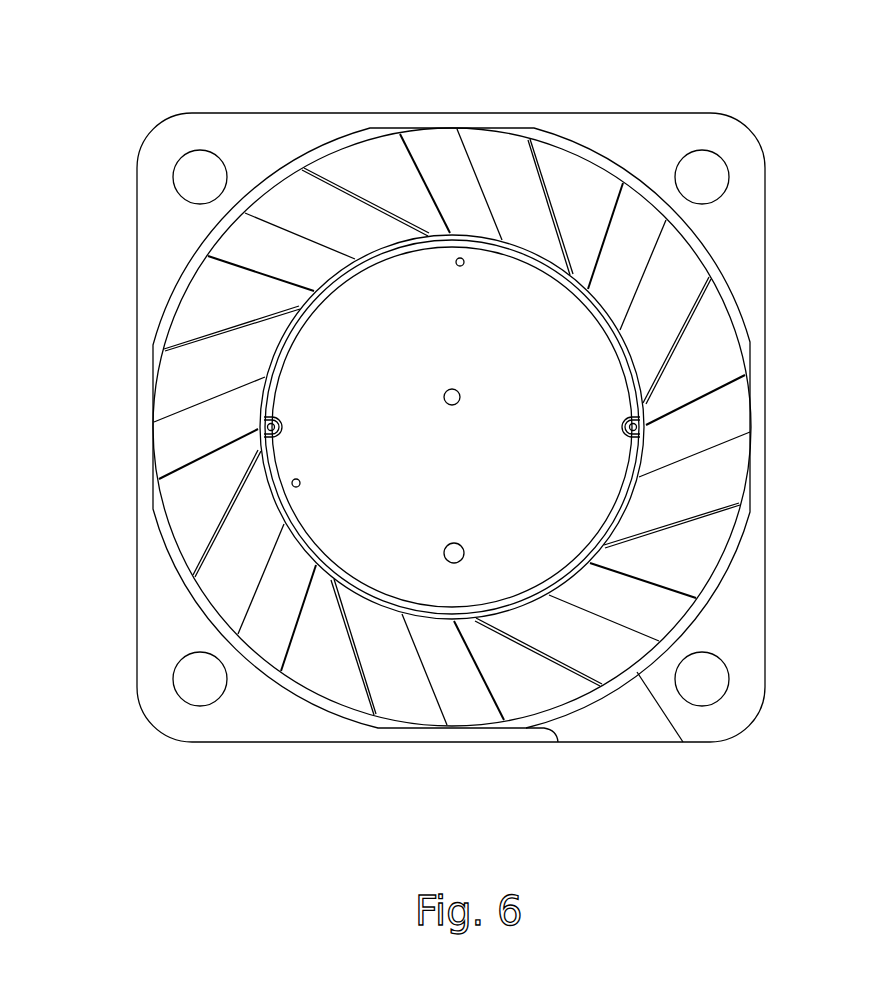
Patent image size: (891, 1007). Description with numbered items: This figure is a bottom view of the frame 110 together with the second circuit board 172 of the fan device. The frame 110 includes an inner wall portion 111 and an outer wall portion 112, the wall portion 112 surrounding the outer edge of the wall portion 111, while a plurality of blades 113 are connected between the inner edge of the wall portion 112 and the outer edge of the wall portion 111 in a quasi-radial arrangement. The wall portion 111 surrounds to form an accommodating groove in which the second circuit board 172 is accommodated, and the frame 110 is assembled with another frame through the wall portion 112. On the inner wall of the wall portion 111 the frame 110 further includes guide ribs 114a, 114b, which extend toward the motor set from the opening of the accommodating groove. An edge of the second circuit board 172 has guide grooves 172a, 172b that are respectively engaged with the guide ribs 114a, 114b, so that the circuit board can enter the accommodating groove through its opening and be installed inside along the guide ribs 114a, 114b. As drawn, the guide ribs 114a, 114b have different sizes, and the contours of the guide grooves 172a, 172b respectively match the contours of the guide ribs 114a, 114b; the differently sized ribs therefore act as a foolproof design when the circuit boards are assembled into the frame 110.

The frame 110 is at (222, 72).
The wall portion 111 is at (240, 468).
The wall portion 112 is at (152, 236).
The blades 113 is at (215, 347).
The second circuit board 172 is at (585, 492).
The guide groove 172a is at (634, 428).
The guide groove 172b is at (270, 425).
The guide rib 114a is at (647, 420).
The guide rib 114b is at (268, 420).